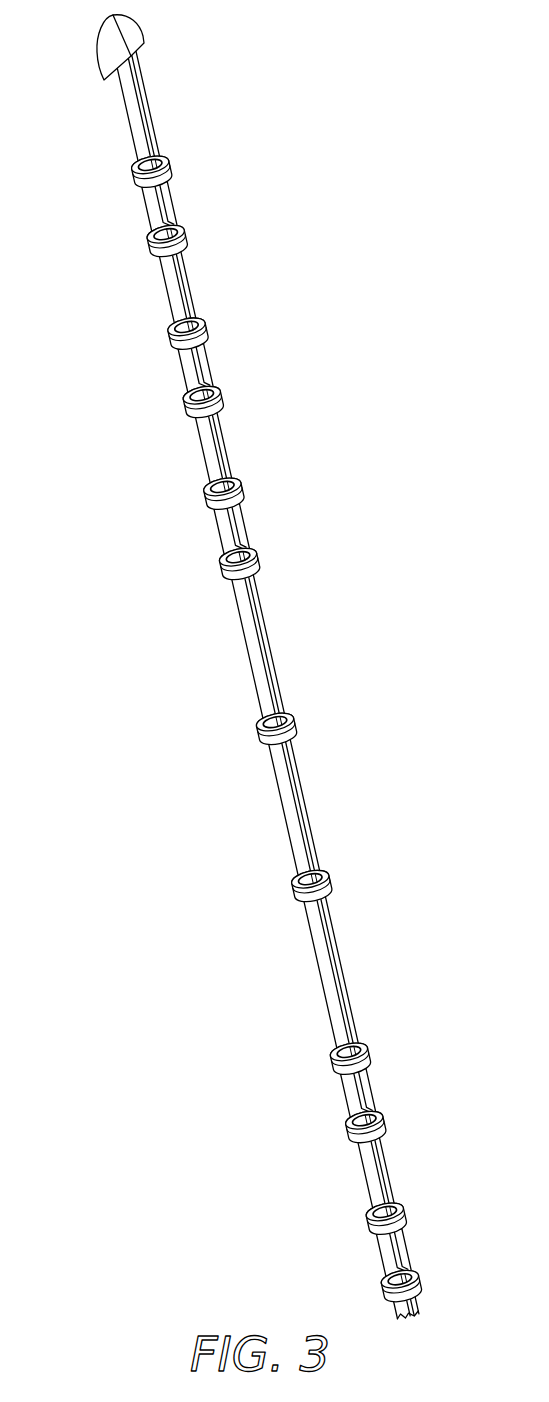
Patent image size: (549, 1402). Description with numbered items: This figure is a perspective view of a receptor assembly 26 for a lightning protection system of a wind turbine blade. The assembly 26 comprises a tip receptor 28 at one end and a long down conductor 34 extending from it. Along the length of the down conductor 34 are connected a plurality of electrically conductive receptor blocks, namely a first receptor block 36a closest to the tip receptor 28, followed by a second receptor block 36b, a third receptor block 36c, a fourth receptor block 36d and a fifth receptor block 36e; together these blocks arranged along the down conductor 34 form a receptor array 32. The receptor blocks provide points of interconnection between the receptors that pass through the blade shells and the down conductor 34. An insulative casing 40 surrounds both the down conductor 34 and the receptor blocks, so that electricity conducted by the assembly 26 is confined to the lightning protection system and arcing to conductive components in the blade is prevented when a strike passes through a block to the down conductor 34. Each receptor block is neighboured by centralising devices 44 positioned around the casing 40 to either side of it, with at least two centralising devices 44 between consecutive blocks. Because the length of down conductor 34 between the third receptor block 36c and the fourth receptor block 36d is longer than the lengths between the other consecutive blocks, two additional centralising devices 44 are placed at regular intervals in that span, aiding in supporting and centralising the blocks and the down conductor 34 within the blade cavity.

The receptor assembly 26 is at (218, 140).
The receptor array 32 is at (276, 677).
The tip receptor 28 is at (100, 36).
The down conductor 34 is at (141, 97).
The first receptor block 36a is at (164, 198).
The second receptor block 36b is at (200, 361).
The third receptor block 36c is at (238, 519).
The fourth receptor block 36d is at (363, 1082).
The fifth receptor block 36e is at (399, 1245).
The insulative casing 40 is at (194, 463).
The centralising device 44 is at (292, 720).